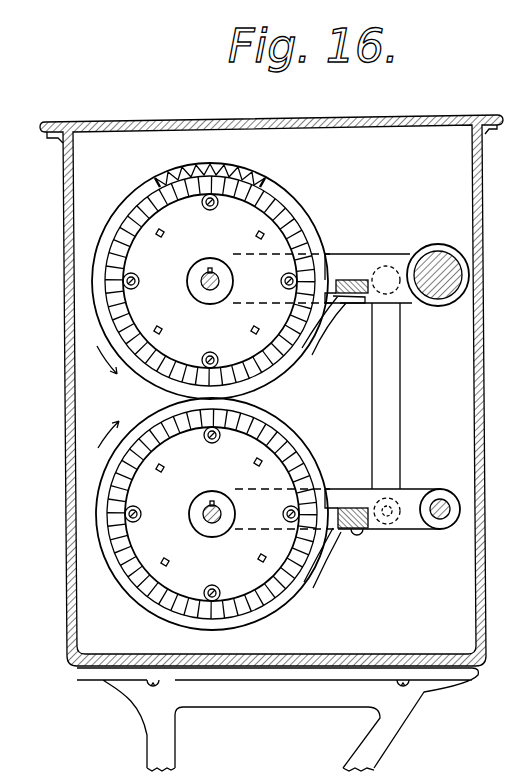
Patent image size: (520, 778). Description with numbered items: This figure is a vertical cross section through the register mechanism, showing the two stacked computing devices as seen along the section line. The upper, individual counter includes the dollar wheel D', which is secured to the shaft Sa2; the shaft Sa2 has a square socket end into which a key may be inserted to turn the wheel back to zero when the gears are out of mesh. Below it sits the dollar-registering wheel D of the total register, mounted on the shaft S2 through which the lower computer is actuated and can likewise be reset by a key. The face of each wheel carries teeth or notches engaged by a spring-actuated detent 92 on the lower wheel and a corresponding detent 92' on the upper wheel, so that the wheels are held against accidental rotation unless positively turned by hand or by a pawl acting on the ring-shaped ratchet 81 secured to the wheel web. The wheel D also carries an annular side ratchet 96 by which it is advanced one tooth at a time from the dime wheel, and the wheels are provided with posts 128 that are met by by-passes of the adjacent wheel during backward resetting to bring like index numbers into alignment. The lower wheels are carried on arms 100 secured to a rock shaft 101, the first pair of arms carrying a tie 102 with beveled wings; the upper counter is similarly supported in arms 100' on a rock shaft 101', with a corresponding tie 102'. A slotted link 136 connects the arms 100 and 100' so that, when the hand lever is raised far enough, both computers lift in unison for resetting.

The dollar wheel of the individual computer D' is at (202, 281).
The dollar-registering wheel D is at (209, 514).
The ratchet 81 is at (216, 178).
The annular side-ratchet 96 is at (280, 342).
The posts 128 is at (158, 322).
The shaft Sa2 is at (207, 271).
The shaft S2 is at (204, 517).
The spring-actuated detent 92' is at (333, 332).
The spring-actuated detent 92 is at (333, 569).
The tie 102' is at (358, 260).
The tie 102 is at (374, 546).
The arms 100' is at (373, 240).
The arms 100 is at (382, 494).
The rock shaft 101' is at (438, 261).
The rock-shaft 101 is at (440, 493).
The slotted link 136 is at (388, 392).